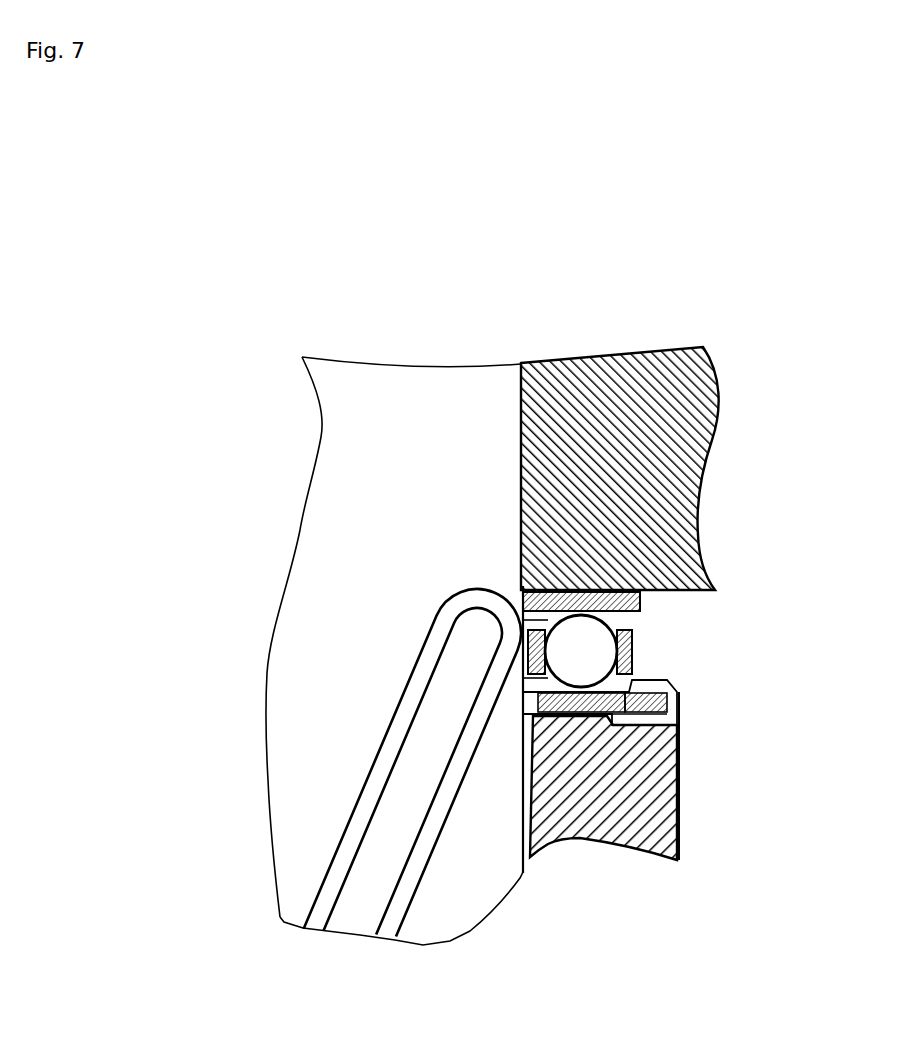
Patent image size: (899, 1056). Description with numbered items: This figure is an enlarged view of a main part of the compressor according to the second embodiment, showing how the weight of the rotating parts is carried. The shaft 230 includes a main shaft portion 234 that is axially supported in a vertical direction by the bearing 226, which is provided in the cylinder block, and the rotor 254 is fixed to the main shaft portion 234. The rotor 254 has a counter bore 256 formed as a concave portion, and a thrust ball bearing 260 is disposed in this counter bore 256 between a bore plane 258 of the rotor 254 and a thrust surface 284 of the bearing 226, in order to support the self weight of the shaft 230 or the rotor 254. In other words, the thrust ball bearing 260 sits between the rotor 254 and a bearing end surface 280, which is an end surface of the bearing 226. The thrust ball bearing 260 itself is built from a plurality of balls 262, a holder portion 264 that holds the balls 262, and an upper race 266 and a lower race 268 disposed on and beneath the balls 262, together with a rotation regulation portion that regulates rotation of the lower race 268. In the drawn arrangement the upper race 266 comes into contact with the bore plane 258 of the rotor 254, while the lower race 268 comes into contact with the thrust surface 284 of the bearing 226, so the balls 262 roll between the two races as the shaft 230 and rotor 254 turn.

The bearing 226 is at (677, 860).
The shaft 230 is at (442, 392).
The main shaft portion 234 is at (317, 622).
The rotor 254 is at (638, 390).
The counter bore 256 is at (667, 647).
The bore plane 258 is at (521, 565).
The thrust ball bearing 260 is at (635, 638).
The balls 262 is at (583, 637).
The holder portion 264 is at (635, 655).
The upper race 266 is at (643, 598).
The lower race 268 is at (523, 785).
The bearing end surface 280 is at (678, 732).
The thrust surface 284 is at (582, 715).